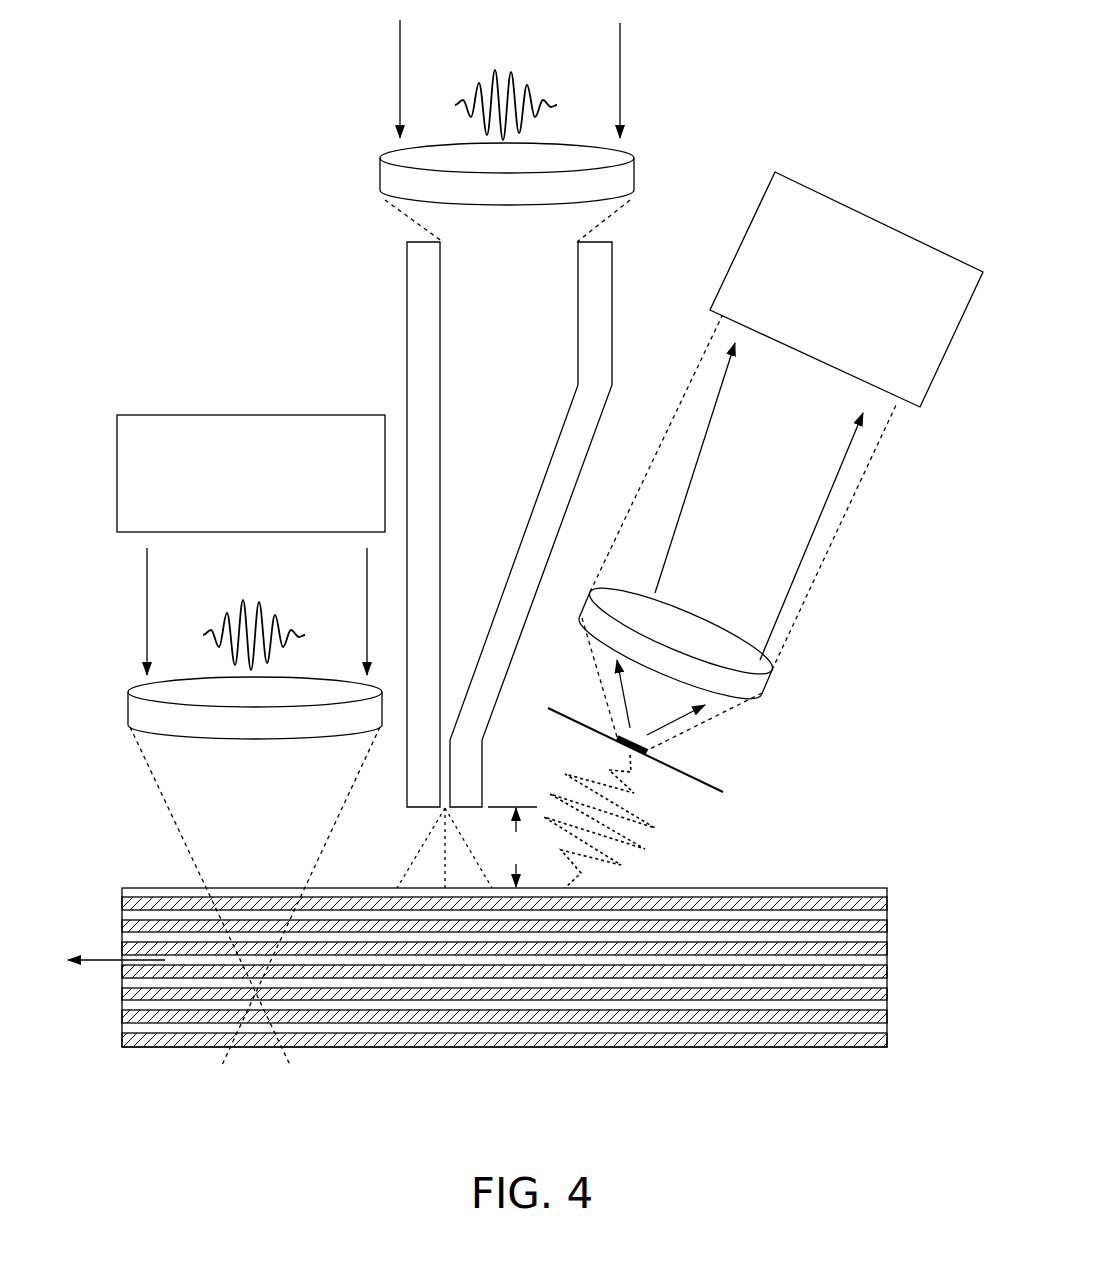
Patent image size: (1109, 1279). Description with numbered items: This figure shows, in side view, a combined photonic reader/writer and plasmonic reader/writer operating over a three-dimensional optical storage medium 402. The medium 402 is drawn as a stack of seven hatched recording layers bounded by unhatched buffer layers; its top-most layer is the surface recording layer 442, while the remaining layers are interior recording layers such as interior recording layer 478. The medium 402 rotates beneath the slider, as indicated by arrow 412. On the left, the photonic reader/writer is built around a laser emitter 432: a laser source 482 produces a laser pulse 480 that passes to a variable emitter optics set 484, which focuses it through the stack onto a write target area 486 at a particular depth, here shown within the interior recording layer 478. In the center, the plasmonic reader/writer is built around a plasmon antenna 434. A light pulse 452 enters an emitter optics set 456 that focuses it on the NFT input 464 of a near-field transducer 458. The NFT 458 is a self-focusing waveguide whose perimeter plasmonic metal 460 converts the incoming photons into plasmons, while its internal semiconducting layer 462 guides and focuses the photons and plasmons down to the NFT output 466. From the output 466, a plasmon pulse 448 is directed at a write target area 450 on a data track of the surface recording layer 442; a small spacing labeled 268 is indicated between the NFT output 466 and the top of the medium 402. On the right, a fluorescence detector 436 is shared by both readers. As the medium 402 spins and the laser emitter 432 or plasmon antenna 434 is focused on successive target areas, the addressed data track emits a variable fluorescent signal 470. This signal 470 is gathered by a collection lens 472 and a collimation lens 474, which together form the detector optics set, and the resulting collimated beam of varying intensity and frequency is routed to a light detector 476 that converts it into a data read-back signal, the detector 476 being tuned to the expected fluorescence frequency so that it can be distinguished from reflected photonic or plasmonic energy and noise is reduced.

The standoff distance 268 is at (513, 847).
The optical storage medium 402 is at (517, 956).
The arrow 412 is at (110, 960).
The laser emitter 432 is at (200, 390).
The plasmon antenna 434 is at (335, 108).
The fluorescence detector 436 is at (858, 170).
The surface recording layer 442 is at (815, 905).
The plasmon pulse 448 is at (416, 867).
The write target area 450 is at (452, 903).
The light pulse 452 is at (483, 60).
The emitter optics set 456 is at (635, 175).
The near-field transducer 458 is at (395, 323).
The perimeter plasmonic metal 460 is at (573, 432).
The internal semiconducting layer 462 is at (487, 310).
The NFT input 464 is at (475, 233).
The NFT output 466 is at (438, 808).
The variable fluorescent signal 470 is at (650, 840).
The collection lens 472 is at (650, 750).
The collimation lens 474 is at (660, 597).
The light detector 476 is at (824, 328).
The interior recording layer 478 is at (858, 993).
The laser pulse 480 is at (233, 589).
The laser source 482 is at (233, 501).
The variable emitter optics set 484 is at (288, 677).
The write target area 486 is at (257, 993).